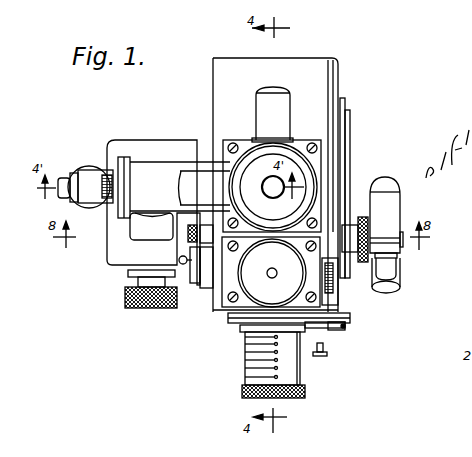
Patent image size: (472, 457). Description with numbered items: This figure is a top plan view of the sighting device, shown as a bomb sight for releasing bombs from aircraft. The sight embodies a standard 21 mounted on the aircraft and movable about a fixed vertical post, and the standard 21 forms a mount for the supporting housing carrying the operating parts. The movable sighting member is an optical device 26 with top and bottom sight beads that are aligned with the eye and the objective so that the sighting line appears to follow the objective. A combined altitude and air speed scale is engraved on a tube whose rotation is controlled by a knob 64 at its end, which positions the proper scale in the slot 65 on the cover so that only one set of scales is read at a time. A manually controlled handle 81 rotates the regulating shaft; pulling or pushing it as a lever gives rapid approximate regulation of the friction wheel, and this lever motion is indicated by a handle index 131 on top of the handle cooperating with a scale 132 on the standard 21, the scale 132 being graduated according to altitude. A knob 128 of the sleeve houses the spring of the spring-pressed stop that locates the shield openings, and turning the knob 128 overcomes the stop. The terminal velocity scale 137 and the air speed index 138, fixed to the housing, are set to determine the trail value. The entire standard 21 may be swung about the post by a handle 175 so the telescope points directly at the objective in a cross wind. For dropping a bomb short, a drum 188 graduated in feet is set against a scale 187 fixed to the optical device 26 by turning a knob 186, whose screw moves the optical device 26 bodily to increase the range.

The standard 21 is at (158, 177).
The optical device 26 is at (402, 204).
The knob 64 is at (327, 327).
The slot 65 is at (345, 121).
The handle 81 is at (85, 166).
The knob 128 is at (243, 288).
The handle index 131 is at (98, 196).
The scale 132 is at (107, 173).
The terminal velocity scale 137 is at (257, 363).
The air speed index 138 is at (283, 363).
The handle 175 is at (155, 309).
The knob 186 is at (322, 333).
The scale 187 is at (323, 293).
The drum 188 is at (333, 283).